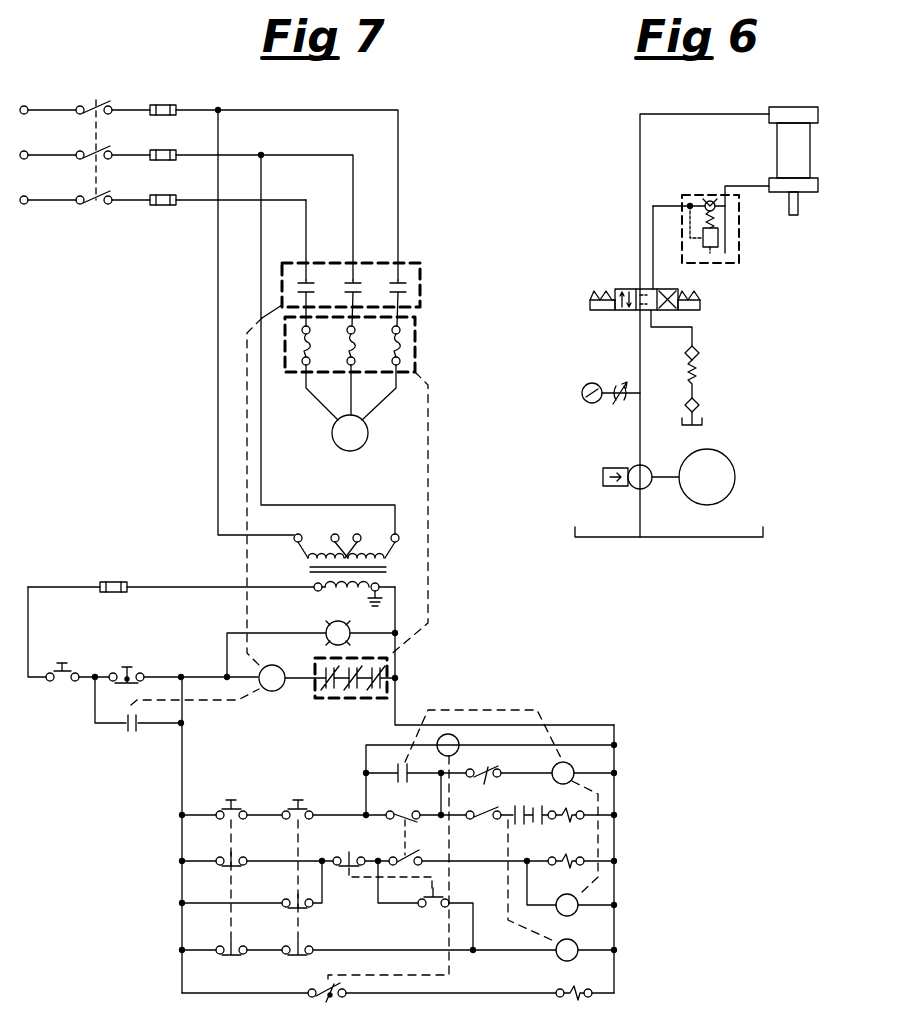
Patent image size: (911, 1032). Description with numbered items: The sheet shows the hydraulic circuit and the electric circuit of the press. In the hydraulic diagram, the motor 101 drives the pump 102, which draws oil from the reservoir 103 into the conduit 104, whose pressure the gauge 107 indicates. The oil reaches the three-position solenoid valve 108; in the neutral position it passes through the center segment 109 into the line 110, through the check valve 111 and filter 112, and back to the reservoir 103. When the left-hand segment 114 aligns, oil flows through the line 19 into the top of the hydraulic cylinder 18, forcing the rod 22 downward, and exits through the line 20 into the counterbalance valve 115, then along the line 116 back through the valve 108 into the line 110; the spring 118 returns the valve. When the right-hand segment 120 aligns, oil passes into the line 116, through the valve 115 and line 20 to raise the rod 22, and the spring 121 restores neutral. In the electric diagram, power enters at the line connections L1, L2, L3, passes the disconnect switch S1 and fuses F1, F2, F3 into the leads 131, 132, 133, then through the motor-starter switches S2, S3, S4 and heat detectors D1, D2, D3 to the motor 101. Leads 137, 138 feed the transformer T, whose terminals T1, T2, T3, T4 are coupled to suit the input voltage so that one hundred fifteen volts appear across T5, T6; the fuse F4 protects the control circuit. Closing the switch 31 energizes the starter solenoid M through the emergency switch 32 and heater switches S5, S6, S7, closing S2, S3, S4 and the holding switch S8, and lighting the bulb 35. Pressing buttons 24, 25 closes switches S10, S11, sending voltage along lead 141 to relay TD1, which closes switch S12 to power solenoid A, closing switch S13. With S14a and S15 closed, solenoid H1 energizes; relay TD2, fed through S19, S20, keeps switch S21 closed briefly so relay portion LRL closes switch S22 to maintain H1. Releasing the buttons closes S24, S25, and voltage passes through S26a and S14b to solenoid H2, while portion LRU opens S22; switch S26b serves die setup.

In FIG. 7, the line connection L1 is at (24, 106).
In FIG. 7, the line connection L2 is at (24, 151).
In FIG. 7, the line connection L3 is at (24, 196).
In FIG. 7, the disconnect switch S1 is at (96, 100).
In FIG. 7, the fuse F1 is at (161, 105).
In FIG. 7, the fuse F2 is at (161, 150).
In FIG. 7, the fuse F3 is at (161, 195).
In FIG. 7, the lead 131 is at (335, 112).
In FIG. 7, the lead 132 is at (312, 156).
In FIG. 7, the lead 133 is at (280, 200).
In FIG. 7, the lead 137 is at (218, 282).
In FIG. 7, the lead 138 is at (260, 266).
In FIG. 7, the motor-starter switch S2 is at (314, 278).
In FIG. 7, the motor-starter switch S3 is at (359, 278).
In FIG. 7, the motor-starter switch S4 is at (406, 278).
In FIG. 7, the heat detector D1 is at (312, 352).
In FIG. 7, the heat detector D2 is at (357, 352).
In FIG. 7, the heat detector D3 is at (404, 344).
In FIG. 7, the motor 101 is at (356, 444).
In FIG. 6, the motor 101 is at (728, 454).
In FIG. 7, the transformer T is at (352, 561).
In FIG. 7, the transformer terminal T1 is at (298, 536).
In FIG. 7, the transformer terminal T2 is at (357, 536).
In FIG. 7, the transformer terminal T3 is at (334, 536).
In FIG. 7, the transformer terminal T4 is at (401, 536).
In FIG. 7, the transformer terminal T5 is at (380, 585).
In FIG. 7, the transformer terminal T6 is at (318, 590).
In FIG. 7, the fuse F4 is at (114, 580).
In FIG. 7, the emergency shut-down switch 32 is at (58, 664).
In FIG. 7, the turn-on switch 31 is at (126, 665).
In FIG. 7, the switch S8 is at (126, 726).
In FIG. 7, the motor-starter induction solenoid M is at (272, 690).
In FIG. 7, the bulb 35 is at (342, 622).
In FIG. 7, the heater switch S5 is at (322, 696).
In FIG. 7, the heater switch S6 is at (346, 696).
In FIG. 7, the heater switch S7 is at (370, 696).
In FIG. 7, the lead 141 is at (364, 760).
In FIG. 7, the time-delay relay TD1 is at (448, 732).
In FIG. 7, the switch S21 is at (480, 776).
In FIG. 7, the switch S22 is at (415, 782).
In FIG. 7, the latching relay portion LRL is at (572, 766).
In FIG. 7, the button 24 is at (231, 802).
In FIG. 7, the button 25 is at (295, 792).
In FIG. 7, the switch S10 is at (232, 822).
In FIG. 7, the switch S11 is at (324, 822).
In FIG. 7, the switch S14a is at (400, 826).
In FIG. 7, the switch S14b is at (468, 849).
In FIG. 7, the switch S15 is at (509, 874).
In FIG. 7, the switch S13 is at (528, 803).
In FIG. 7, the solenoid H1 is at (568, 813).
In FIG. 7, the solenoid H2 is at (568, 857).
In FIG. 7, the switch S24 is at (257, 871).
In FIG. 7, the switch S26a is at (348, 874).
In FIG. 7, the latching relay portion LRU is at (572, 908).
In FIG. 7, the switch S25 is at (252, 896).
In FIG. 7, the switch S26b is at (425, 905).
In FIG. 7, the switch S19 is at (232, 960).
In FIG. 7, the switch S20 is at (411, 960).
In FIG. 7, the time-delay relay TD2 is at (572, 960).
In FIG. 7, the switch S12 is at (320, 998).
In FIG. 7, the solenoid A is at (574, 1002).
In FIG. 6, the line 19 is at (692, 114).
In FIG. 6, the hydraulic cylinder 18 is at (808, 140).
In FIG. 6, the rod 22 is at (800, 206).
In FIG. 6, the line 20 is at (728, 186).
In FIG. 6, the counterbalance valve 115 is at (740, 256).
In FIG. 6, the line 116 is at (656, 268).
In FIG. 6, the solenoid valve 108 is at (596, 278).
In FIG. 6, the left-hand segment 114 is at (620, 286).
In FIG. 6, the spring 121 is at (590, 296).
In FIG. 6, the spring 118 is at (698, 292).
In FIG. 6, the right-hand segment 120 is at (678, 314).
In FIG. 6, the center segment 109 is at (636, 314).
In FIG. 6, the line 110 is at (676, 334).
In FIG. 6, the check valve 111 is at (696, 360).
In FIG. 6, the filter 112 is at (698, 402).
In FIG. 6, the reservoir 103 is at (708, 428).
In FIG. 6, the gauge 107 is at (590, 384).
In FIG. 6, the conduit 104 is at (640, 434).
In FIG. 6, the pump 102 is at (600, 476).